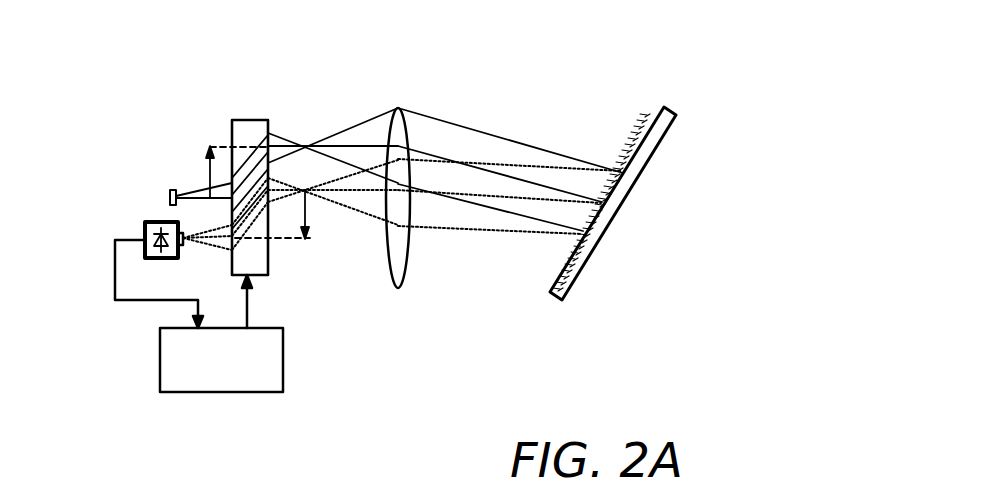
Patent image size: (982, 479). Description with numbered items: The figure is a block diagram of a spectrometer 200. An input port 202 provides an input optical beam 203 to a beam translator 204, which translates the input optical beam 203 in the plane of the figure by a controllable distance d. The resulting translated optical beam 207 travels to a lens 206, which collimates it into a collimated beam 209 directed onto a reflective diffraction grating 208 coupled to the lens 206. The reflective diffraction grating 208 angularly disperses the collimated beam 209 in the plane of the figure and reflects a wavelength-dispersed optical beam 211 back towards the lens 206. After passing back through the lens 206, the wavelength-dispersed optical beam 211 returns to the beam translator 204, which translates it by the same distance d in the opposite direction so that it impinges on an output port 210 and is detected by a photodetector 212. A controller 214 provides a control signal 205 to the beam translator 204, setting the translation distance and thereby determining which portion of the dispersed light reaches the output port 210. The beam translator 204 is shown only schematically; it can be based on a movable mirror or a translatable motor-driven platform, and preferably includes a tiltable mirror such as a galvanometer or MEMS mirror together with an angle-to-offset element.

The spectrometer 200 is at (536, 54).
The input port 202 is at (175, 188).
The input optical beam 203 is at (218, 204).
The beam translator 204 is at (248, 119).
The control signal 205 is at (248, 305).
The lens 206 is at (399, 288).
The translated optical beam 207 is at (343, 133).
The reflective diffraction grating 208 is at (612, 227).
The collimated beam 209 is at (446, 125).
The output port 210 is at (178, 250).
The wavelength-dispersed optical beam 211 is at (500, 228).
The photodetector 212 is at (144, 232).
The controller 214 is at (201, 377).